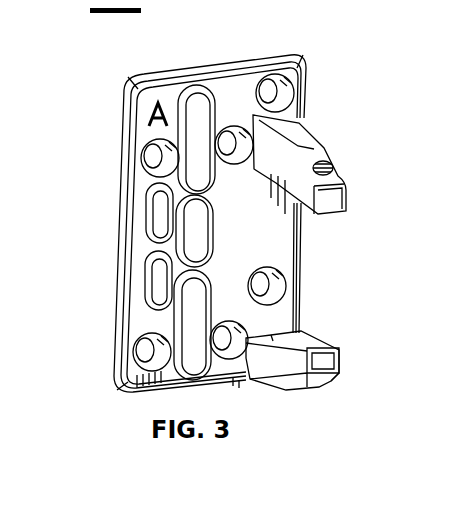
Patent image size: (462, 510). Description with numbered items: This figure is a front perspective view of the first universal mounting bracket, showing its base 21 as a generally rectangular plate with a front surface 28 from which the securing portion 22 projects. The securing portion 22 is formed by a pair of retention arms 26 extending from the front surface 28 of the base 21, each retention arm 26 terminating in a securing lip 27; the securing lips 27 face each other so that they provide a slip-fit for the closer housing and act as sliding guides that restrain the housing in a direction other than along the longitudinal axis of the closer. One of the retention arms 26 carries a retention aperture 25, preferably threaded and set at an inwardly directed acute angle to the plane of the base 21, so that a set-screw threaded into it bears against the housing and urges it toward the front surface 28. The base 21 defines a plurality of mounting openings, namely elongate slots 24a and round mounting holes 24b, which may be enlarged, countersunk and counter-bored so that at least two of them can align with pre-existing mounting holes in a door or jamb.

The base 21 is at (118, 196).
The securing portion 22 is at (342, 152).
The slots 24a is at (207, 87).
The mounting holes 24b is at (263, 82).
The retention aperture 25 is at (332, 172).
The retention arms 26 is at (270, 155).
The securing lip 27 is at (303, 208).
The front surface 28 is at (273, 252).